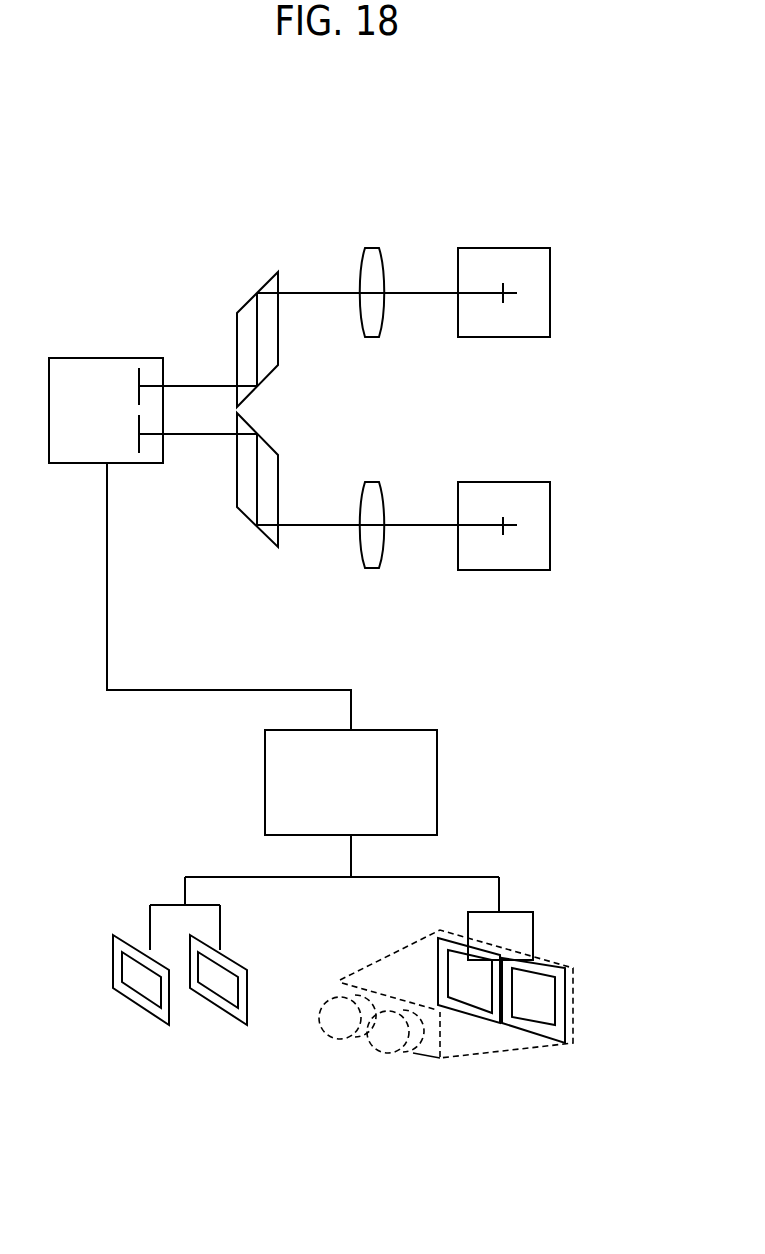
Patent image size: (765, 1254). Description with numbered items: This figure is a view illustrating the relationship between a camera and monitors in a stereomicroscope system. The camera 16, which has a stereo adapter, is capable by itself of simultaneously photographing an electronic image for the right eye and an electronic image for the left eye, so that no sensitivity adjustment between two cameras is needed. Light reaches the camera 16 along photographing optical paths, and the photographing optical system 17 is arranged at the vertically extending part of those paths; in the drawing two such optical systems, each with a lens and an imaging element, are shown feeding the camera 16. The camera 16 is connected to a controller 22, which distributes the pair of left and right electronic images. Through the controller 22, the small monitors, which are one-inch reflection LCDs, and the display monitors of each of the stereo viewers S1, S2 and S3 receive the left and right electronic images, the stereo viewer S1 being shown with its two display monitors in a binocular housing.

The camera 16 is at (107, 358).
The photographing optical system 17 is at (530, 213).
The controller 22 is at (437, 780).
The stereo viewer S1 is at (413, 979).
The stereo viewer S2 is at (413, 979).
The stereo viewer S3 is at (370, 965).